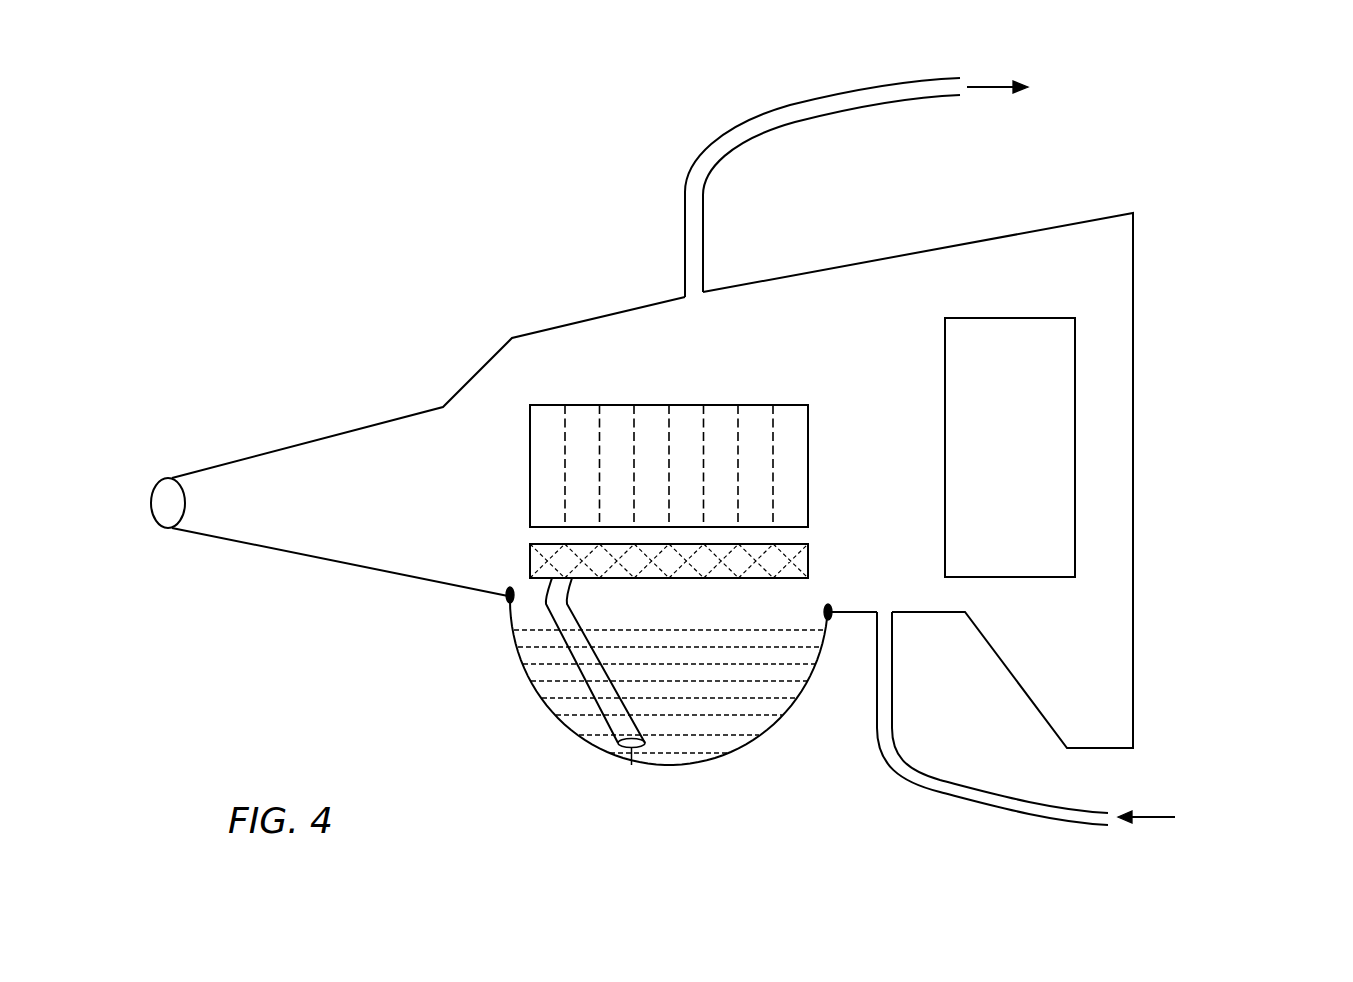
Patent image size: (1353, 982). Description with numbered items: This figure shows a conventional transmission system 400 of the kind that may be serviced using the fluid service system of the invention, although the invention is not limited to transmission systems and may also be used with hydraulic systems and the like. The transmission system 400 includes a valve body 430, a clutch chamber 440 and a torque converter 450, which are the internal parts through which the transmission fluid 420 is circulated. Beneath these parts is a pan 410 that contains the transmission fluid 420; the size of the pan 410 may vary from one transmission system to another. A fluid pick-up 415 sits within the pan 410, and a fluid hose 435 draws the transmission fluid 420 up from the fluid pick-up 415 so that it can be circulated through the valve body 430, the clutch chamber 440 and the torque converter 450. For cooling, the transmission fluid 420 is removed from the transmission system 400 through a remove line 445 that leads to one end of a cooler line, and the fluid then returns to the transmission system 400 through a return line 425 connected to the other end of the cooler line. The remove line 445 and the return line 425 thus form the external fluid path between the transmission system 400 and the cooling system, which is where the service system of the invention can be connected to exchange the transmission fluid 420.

The transmission system 400 is at (327, 217).
The pan 410 is at (533, 683).
The fluid pick-up 415 is at (630, 755).
The transmission fluid 420 is at (770, 688).
The return line 425 is at (967, 807).
The valve body 430 is at (808, 558).
The fluid hose 435 is at (573, 612).
The clutch chamber 440 is at (612, 405).
The remove line 445 is at (798, 120).
The torque converter 450 is at (965, 318).